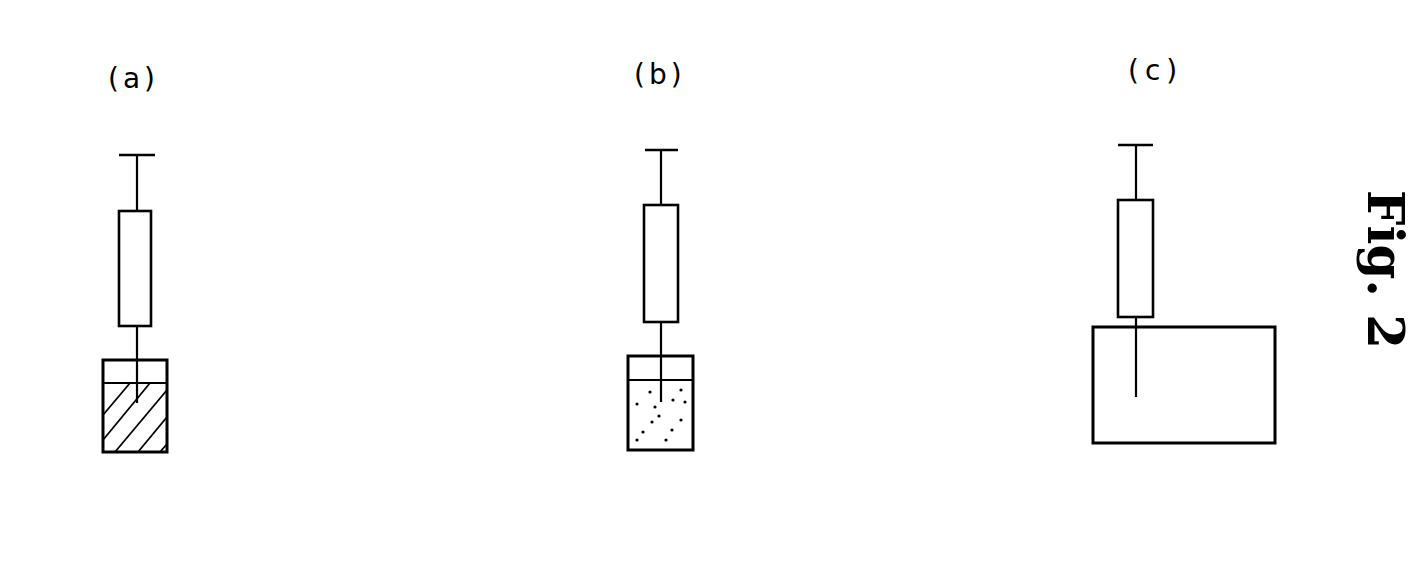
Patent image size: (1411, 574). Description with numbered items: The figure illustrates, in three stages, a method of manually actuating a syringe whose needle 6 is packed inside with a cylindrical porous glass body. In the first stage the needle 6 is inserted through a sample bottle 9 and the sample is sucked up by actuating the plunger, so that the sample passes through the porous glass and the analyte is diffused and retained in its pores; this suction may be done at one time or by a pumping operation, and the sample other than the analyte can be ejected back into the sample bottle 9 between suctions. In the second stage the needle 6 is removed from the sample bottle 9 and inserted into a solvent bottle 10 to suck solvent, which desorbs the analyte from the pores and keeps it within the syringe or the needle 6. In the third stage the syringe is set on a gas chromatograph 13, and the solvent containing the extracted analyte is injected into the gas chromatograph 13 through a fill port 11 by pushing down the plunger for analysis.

The needle 6 is at (137, 347).
The sample bottle 9 is at (167, 410).
The solvent bottle 10 is at (693, 403).
The fill port 11 is at (1138, 328).
The gas chromatograph 13 is at (1093, 368).